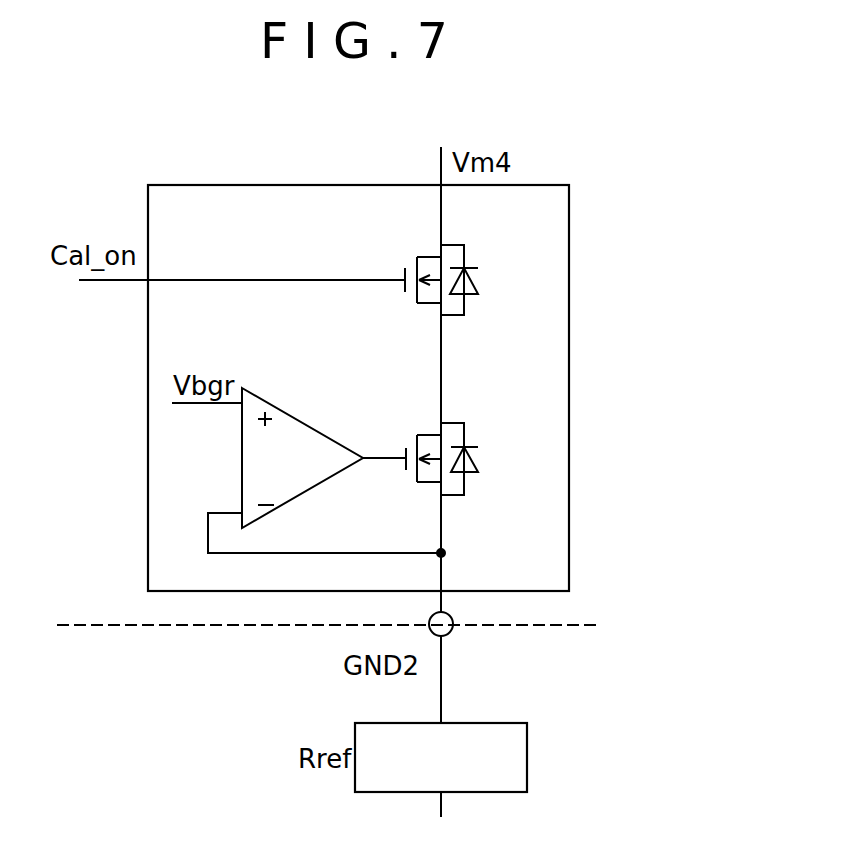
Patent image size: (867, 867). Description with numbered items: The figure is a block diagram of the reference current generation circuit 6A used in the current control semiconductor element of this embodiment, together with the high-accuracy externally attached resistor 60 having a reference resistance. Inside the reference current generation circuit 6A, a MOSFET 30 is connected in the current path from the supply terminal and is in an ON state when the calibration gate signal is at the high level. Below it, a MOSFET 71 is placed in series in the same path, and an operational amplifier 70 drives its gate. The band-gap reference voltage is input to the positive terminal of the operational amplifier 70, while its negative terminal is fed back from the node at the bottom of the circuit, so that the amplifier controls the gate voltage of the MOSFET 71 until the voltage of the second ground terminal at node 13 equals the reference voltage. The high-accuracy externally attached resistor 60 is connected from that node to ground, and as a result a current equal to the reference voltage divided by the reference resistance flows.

The reference current generation circuit 6A is at (569, 367).
The MOSFET 30 is at (464, 256).
The operational amplifier 70 is at (305, 422).
The MOSFET 71 is at (472, 482).
The GND2 terminal node 13 is at (448, 634).
The high-accuracy externally attached resistor 60 is at (528, 762).